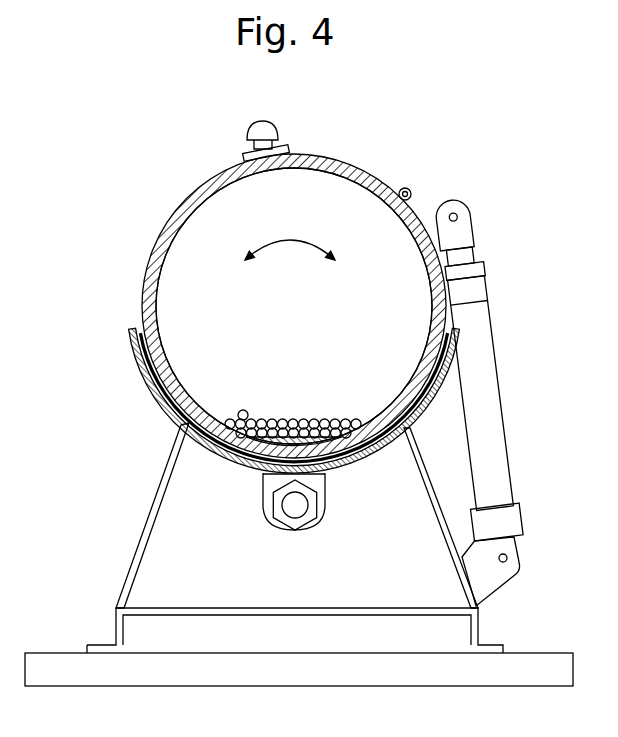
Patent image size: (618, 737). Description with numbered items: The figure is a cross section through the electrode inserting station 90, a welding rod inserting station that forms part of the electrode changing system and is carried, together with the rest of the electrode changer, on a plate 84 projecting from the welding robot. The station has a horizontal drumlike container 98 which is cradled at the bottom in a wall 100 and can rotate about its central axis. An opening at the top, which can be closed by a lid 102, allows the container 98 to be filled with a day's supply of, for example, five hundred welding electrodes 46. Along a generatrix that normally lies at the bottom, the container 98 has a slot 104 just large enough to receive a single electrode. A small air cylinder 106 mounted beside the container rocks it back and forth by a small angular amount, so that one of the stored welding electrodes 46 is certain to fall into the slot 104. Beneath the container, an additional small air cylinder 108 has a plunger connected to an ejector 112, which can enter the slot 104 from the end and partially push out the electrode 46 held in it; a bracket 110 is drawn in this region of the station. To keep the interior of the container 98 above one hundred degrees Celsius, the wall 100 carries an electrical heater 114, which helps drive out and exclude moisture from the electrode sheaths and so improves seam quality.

The electrode inserting station 90 is at (431, 166).
The plate 84 is at (248, 674).
The lid 102 is at (322, 156).
The drumlike container 98 is at (146, 272).
The electrical heater 114 is at (167, 416).
The wall 100 is at (138, 369).
The slot 104 is at (262, 475).
The welding electrodes 46 is at (301, 422).
The bracket 110 is at (326, 479).
The ejector 112 is at (272, 497).
The small air cylinder 108 is at (306, 518).
The small air cylinder 106 is at (496, 366).